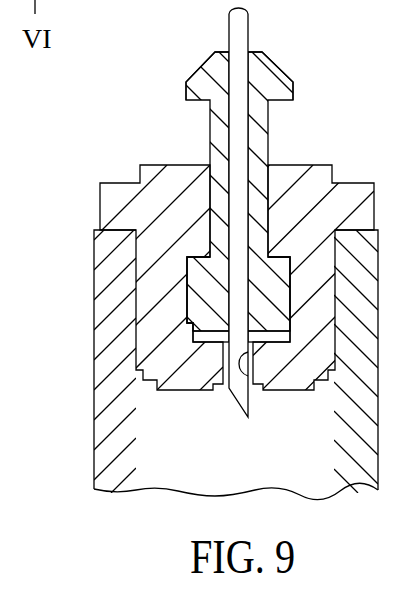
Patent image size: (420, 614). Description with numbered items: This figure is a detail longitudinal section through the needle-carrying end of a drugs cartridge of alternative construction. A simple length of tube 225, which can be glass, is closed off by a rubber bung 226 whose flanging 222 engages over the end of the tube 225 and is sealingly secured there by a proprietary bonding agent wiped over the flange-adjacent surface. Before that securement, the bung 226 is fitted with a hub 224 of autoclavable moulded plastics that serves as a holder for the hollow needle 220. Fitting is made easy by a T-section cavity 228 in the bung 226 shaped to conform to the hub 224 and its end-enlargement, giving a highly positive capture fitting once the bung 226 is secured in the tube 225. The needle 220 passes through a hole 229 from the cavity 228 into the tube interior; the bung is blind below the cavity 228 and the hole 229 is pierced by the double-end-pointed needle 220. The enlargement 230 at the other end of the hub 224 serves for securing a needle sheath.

The hollow needle 220 is at (249, 17).
The flanging 222 is at (100, 193).
The hub 224 is at (210, 134).
The tube 225 is at (107, 423).
The rubber bung 226 is at (165, 280).
The T-section cavity 228 is at (209, 345).
The hole 229 is at (251, 392).
The enlargement 230 is at (293, 86).